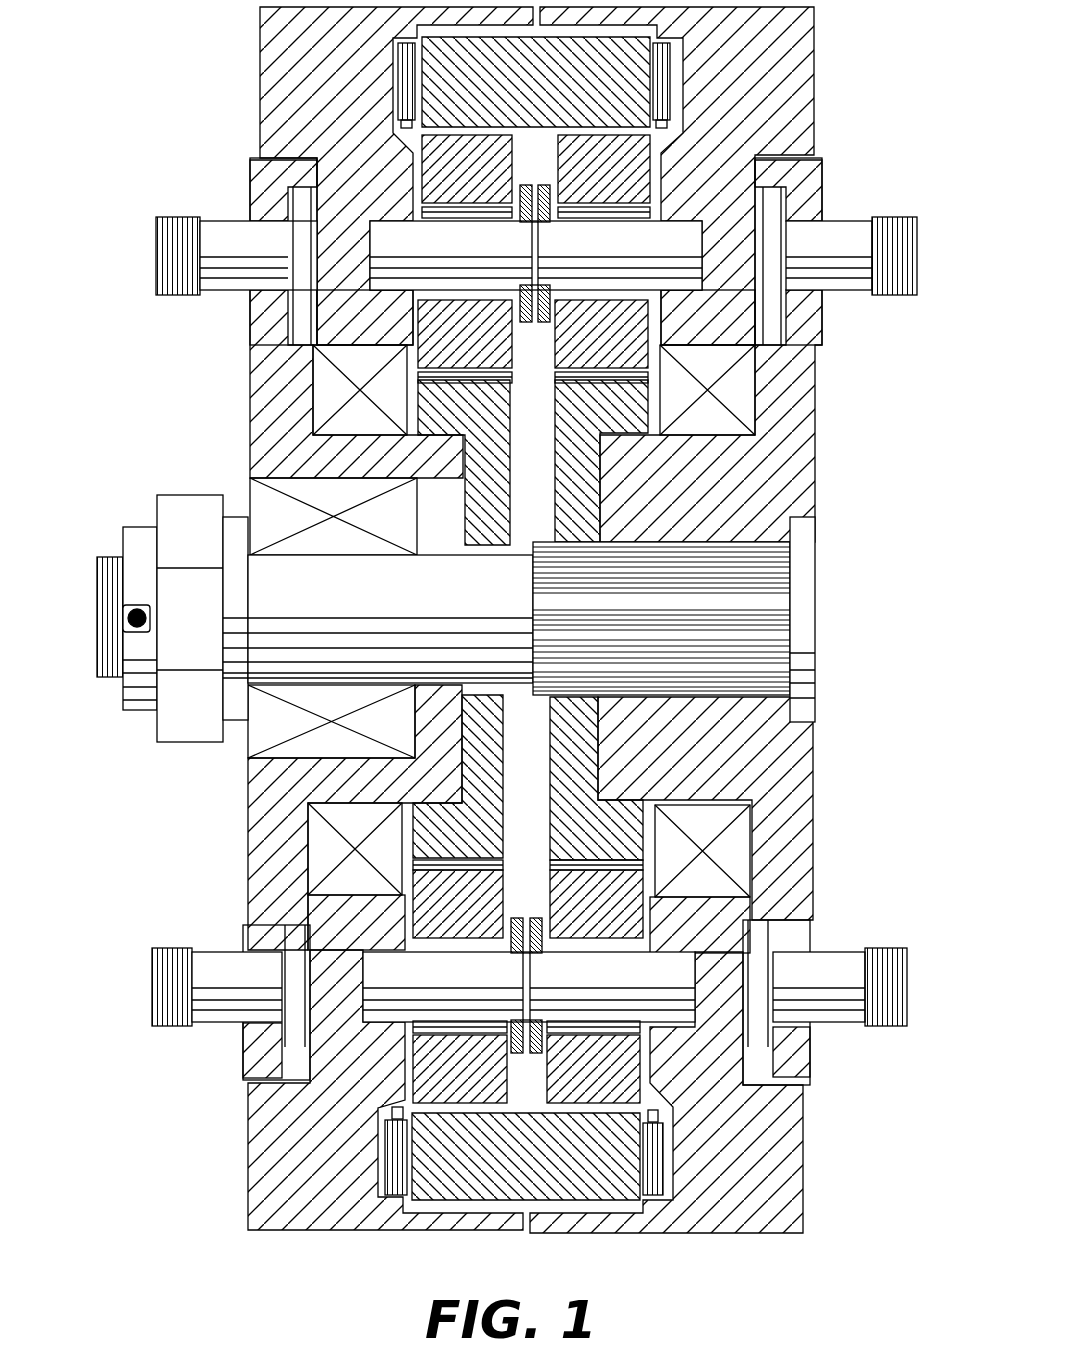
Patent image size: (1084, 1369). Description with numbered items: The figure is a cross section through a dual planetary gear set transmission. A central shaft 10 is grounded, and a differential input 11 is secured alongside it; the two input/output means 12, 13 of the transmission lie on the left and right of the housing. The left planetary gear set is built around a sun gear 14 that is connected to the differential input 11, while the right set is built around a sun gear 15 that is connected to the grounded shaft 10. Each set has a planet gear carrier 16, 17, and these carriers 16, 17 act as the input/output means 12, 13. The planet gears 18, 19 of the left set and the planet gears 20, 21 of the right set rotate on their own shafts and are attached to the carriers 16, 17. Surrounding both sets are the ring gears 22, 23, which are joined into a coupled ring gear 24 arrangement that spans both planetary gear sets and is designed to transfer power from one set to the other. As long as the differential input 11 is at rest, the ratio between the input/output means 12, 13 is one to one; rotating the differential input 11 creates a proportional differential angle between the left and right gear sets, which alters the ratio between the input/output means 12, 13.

The shaft 10 is at (803, 603).
The differential input 11 is at (273, 413).
The input/output means 12 is at (273, 77).
The input/output means 13 is at (780, 107).
The sun gear 14 is at (461, 619).
The sun gear 15 is at (599, 620).
The planet gear carrier 16 is at (392, 292).
The planet gear carrier 17 is at (732, 333).
The planet gear 18 is at (465, 334).
The planet gear 19 is at (604, 169).
The planet gear 20 is at (458, 904).
The planet gear 21 is at (593, 1069).
The ring gear 22 is at (474, 618).
The ring gear 23 is at (588, 618).
The coupled ring gear 24 is at (531, 618).